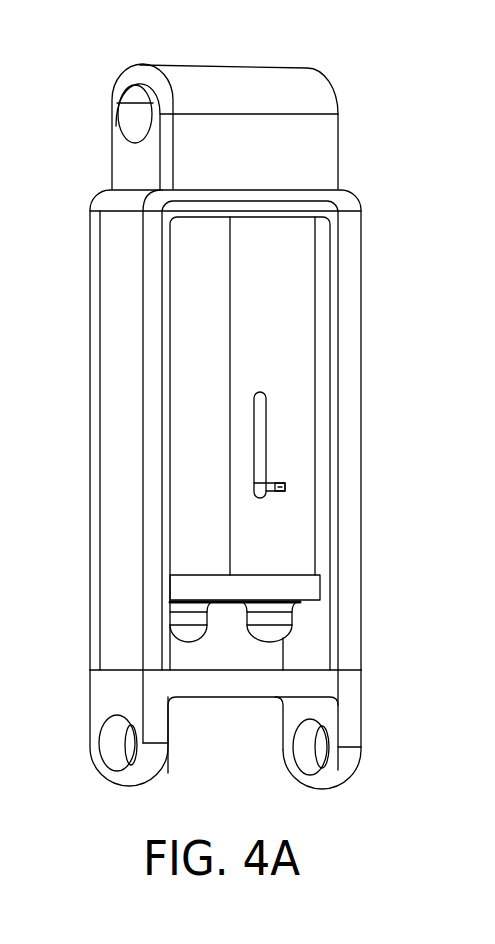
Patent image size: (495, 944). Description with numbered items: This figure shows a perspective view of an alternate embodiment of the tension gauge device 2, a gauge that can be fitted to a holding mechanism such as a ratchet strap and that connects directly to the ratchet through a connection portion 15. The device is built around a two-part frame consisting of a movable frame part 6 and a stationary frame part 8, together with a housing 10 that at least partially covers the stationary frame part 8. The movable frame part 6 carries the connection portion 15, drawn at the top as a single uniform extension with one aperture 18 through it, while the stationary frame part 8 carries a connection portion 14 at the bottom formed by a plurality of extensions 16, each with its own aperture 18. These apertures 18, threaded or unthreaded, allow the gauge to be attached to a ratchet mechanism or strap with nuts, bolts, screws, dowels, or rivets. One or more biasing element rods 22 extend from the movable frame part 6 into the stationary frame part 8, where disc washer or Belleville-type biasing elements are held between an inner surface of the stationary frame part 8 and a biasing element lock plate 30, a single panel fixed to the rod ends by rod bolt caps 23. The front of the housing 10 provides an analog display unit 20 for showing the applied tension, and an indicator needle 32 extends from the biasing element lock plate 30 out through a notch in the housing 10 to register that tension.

The tension gauge device 2 is at (340, 33).
The movable frame part 6 is at (323, 170).
The stationary frame part 8 is at (340, 684).
The housing 10 is at (345, 250).
The connection portion 14 is at (372, 795).
The connection portion 15 is at (163, 44).
The extensions 16 is at (105, 708).
The aperture 18 is at (130, 120).
The analog display unit 20 is at (285, 435).
The biasing element rods 22 is at (188, 353).
The rod bolt caps 23 is at (178, 615).
The biasing element lock plate 30 is at (288, 588).
The indicator needle 32 is at (285, 484).